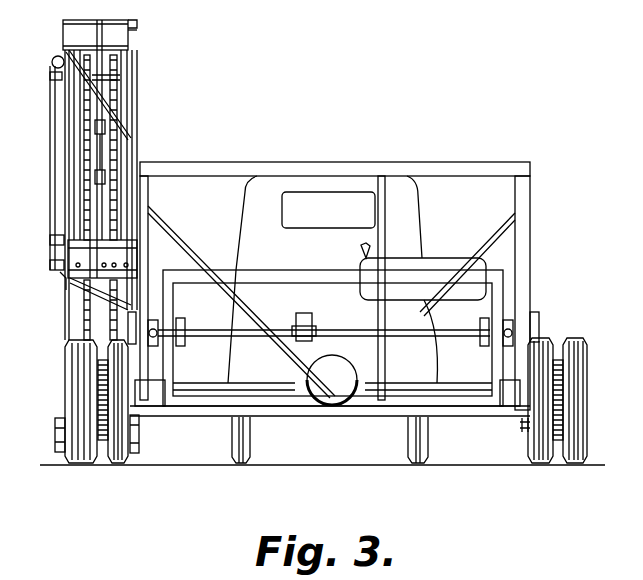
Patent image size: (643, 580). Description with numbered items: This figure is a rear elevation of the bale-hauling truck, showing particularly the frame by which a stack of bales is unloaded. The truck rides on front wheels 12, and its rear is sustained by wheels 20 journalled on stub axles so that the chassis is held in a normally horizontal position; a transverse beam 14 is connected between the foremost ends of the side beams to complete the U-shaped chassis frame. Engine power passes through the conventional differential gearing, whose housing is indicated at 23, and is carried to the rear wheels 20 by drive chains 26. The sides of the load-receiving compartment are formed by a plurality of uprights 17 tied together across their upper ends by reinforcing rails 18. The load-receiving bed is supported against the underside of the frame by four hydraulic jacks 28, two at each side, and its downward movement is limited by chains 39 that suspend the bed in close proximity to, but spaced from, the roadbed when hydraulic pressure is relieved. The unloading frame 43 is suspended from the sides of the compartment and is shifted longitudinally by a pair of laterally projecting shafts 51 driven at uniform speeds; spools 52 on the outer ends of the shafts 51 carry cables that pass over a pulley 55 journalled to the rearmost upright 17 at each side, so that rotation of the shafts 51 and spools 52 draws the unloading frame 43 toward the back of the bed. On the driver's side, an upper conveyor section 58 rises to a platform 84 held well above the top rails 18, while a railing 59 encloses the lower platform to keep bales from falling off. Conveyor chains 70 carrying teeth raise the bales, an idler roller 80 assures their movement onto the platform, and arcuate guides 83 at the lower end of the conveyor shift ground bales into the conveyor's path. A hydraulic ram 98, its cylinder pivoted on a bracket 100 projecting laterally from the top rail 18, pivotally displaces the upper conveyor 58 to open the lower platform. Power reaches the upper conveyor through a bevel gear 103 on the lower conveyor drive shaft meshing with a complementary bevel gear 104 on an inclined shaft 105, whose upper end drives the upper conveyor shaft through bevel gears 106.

The front wheels 12 is at (250, 440).
The transverse beam 14 is at (155, 406).
The uprights 17 is at (530, 232).
The reinforcing rails 18 is at (472, 173).
The wheels 20 is at (587, 388).
The differential gearing housing 23 is at (332, 380).
The drive chains 26 is at (563, 392).
The hydraulic jacks 28 is at (545, 325).
The chains 39 is at (522, 430).
The unloading frame 43 is at (503, 302).
The laterally projecting shafts 51 is at (186, 337).
The spools 52 is at (184, 326).
The pulley 55 is at (160, 340).
The upper conveyor section 58 is at (144, 98).
The railing 59 is at (68, 243).
The conveyor chains 70 is at (112, 322).
The idler roller 80 is at (126, 265).
The arcuate guides 83 is at (55, 440).
The platform 84 is at (131, 30).
The hydraulic ram 98 is at (112, 162).
The bracket 100 is at (110, 200).
The bevel gear 103 is at (65, 288).
The bevel gear 104 is at (52, 267).
The inclined shaft 105 is at (52, 164).
The bevel gears 106 is at (54, 60).